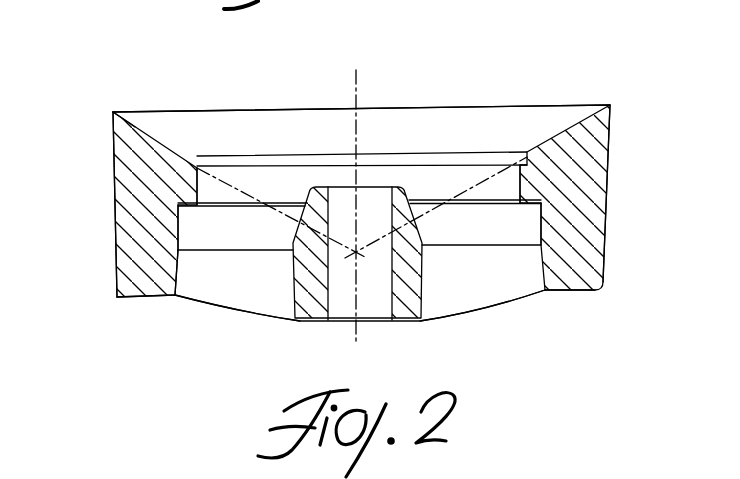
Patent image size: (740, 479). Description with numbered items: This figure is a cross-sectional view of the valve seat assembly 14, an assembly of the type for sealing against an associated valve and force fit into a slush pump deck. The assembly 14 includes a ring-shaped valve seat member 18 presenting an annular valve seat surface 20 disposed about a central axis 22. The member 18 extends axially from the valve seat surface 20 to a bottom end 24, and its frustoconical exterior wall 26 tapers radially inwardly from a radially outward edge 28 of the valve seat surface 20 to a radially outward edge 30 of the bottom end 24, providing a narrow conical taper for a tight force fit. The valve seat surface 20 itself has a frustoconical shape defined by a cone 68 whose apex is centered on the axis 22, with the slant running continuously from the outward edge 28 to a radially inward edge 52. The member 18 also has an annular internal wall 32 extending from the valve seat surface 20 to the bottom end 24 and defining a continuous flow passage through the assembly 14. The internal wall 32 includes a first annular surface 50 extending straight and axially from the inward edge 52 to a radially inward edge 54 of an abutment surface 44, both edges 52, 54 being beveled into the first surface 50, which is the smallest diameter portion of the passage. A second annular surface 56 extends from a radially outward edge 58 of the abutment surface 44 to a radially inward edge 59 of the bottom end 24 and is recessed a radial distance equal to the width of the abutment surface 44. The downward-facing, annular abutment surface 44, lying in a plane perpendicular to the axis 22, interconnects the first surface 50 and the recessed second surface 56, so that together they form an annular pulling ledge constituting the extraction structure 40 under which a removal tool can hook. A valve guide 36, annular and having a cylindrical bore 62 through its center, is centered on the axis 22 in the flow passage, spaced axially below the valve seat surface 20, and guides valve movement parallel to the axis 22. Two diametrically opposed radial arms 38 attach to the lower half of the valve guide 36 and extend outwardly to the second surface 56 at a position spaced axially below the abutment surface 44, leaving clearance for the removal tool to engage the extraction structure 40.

The valve seat assembly 14 is at (626, 101).
The valve seat member 18 is at (522, 104).
The valve seat surface 20 is at (205, 110).
The central axis 22 is at (356, 85).
The bottom end 24 is at (566, 292).
The frustoconical exterior wall 26 is at (113, 176).
The radially outward edge of the valve seat surface 28 is at (115, 110).
The radially outward edge of the bottom end 30 is at (117, 297).
The annular internal wall 32 is at (202, 189).
The valve guide 36 is at (291, 302).
The radial arms 38 is at (242, 307).
The extraction structure 40 is at (189, 214).
The abutment surface 44 is at (508, 246).
The first annular surface 50 is at (520, 180).
The radially inward edge of the valve seat surface 52 is at (248, 155).
The radially inward edge of the abutment surface 54 is at (530, 204).
The second annular surface 56 is at (178, 237).
The radially outward edge of the abutment surface 58 is at (530, 206).
The radially inward edge of the bottom end 59 is at (177, 298).
The cylindrical bore 62 is at (326, 192).
The cone 68 is at (240, 180).